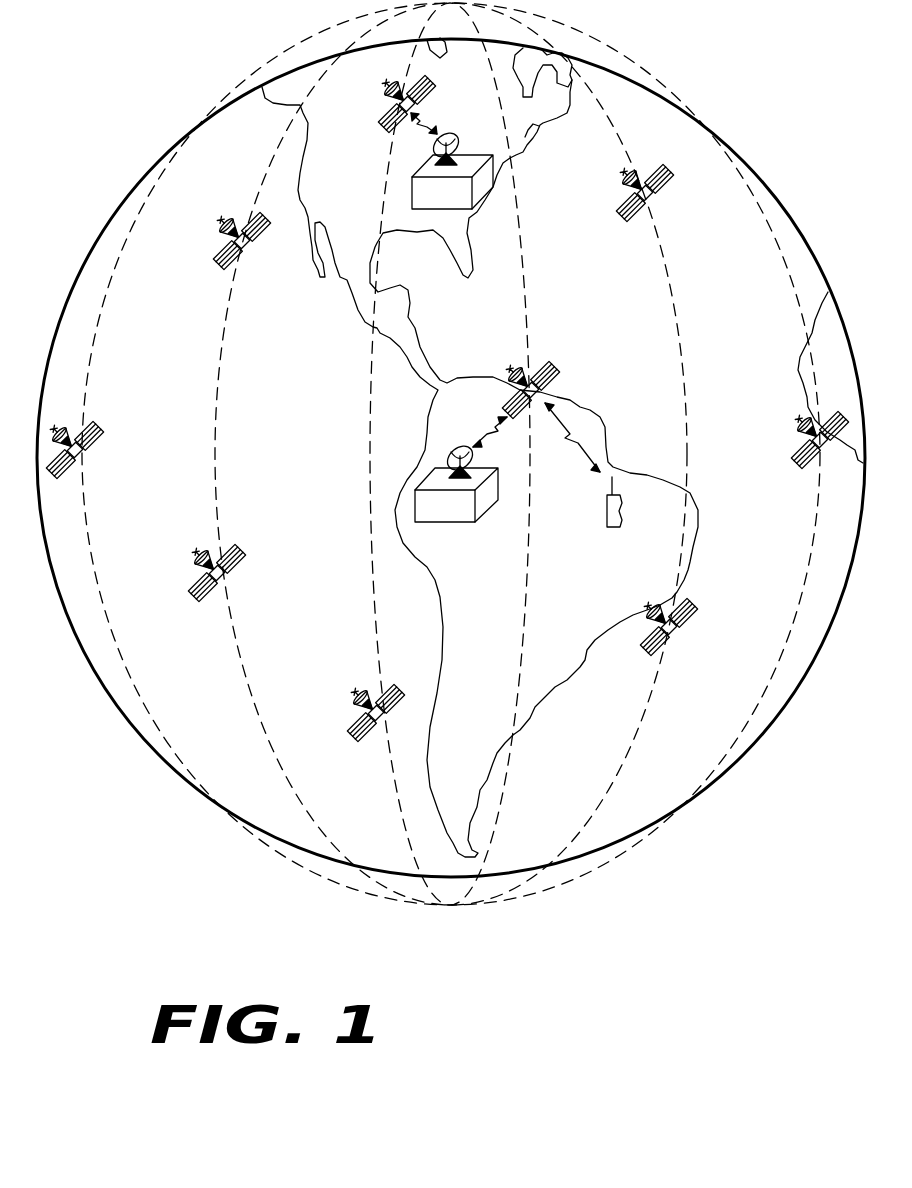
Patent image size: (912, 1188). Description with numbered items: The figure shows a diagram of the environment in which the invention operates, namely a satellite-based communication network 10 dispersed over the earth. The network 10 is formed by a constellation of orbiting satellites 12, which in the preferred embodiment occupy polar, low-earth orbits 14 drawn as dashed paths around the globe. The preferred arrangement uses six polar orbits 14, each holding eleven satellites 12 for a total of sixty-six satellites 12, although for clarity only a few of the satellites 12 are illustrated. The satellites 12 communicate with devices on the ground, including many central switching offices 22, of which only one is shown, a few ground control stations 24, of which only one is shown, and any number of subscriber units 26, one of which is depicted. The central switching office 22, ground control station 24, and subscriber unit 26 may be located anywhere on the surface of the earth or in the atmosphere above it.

The satellite-based communication network 10 is at (447, 905).
The satellites 12 is at (383, 128).
The polar, low-earth orbits 14 is at (276, 162).
The central switching office 22 is at (452, 523).
The ground control station 24 is at (475, 155).
The subscriber unit 26 is at (613, 527).